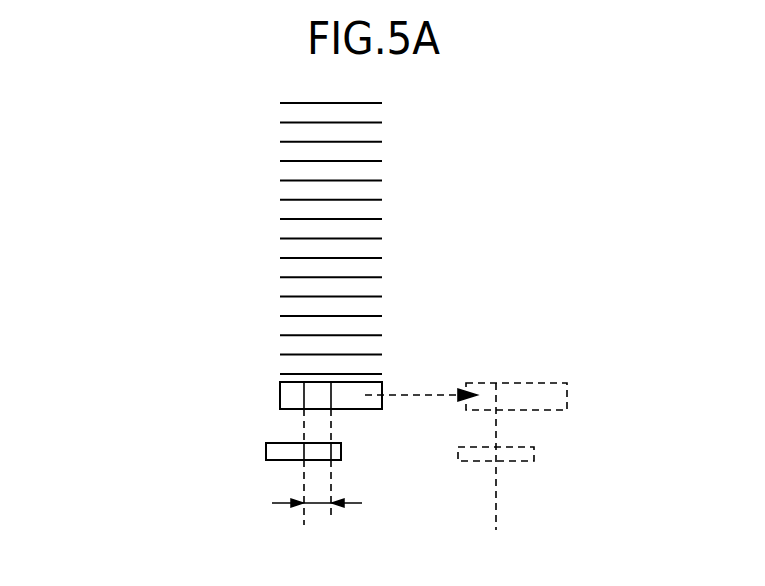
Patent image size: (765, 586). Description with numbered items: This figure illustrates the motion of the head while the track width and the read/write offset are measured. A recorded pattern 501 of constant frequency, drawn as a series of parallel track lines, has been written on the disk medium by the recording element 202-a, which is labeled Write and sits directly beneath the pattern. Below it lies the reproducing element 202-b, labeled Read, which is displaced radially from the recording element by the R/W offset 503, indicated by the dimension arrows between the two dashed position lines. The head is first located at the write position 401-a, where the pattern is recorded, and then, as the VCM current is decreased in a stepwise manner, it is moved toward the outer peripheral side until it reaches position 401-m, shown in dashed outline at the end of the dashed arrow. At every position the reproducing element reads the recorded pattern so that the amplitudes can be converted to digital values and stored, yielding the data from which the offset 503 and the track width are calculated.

The recorded pattern 501 is at (372, 141).
The recording element 202-a is at (182, 394).
The reproducing element 202-b is at (182, 451).
The R/W offset 503 is at (345, 504).
The write position 401-a is at (303, 471).
The head position 401-m is at (466, 471).